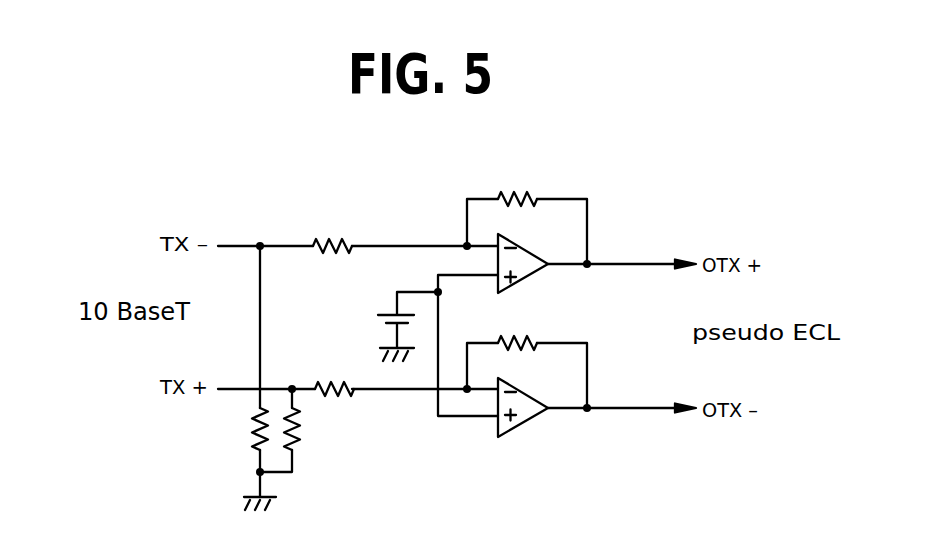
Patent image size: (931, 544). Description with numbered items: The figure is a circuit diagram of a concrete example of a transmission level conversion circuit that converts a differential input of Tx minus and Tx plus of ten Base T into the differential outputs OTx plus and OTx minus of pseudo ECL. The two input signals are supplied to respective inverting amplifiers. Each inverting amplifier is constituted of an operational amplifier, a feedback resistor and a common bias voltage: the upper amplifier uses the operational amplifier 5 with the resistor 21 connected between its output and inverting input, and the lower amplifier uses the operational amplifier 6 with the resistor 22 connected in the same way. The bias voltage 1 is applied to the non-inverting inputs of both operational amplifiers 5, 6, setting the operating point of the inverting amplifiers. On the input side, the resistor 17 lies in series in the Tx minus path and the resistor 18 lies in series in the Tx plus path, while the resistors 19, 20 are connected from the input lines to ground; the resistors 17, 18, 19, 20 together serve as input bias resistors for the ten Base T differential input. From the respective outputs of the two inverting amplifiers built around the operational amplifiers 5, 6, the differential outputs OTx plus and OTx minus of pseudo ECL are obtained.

The input bias resistor 17 is at (330, 235).
The input bias resistor 18 is at (340, 396).
The input bias resistor 19 is at (250, 432).
The input bias resistor 20 is at (298, 428).
The resistor 21 is at (508, 195).
The resistor 22 is at (527, 342).
The operational amplifier 5 is at (537, 256).
The operational amplifier 6 is at (530, 420).
The bias voltage 1 is at (383, 326).